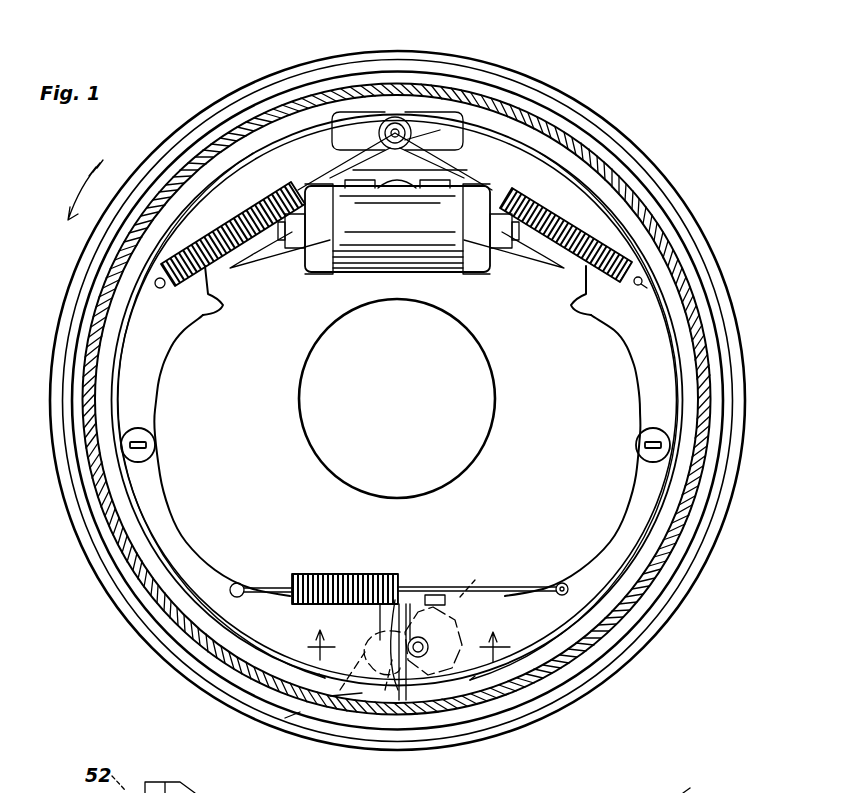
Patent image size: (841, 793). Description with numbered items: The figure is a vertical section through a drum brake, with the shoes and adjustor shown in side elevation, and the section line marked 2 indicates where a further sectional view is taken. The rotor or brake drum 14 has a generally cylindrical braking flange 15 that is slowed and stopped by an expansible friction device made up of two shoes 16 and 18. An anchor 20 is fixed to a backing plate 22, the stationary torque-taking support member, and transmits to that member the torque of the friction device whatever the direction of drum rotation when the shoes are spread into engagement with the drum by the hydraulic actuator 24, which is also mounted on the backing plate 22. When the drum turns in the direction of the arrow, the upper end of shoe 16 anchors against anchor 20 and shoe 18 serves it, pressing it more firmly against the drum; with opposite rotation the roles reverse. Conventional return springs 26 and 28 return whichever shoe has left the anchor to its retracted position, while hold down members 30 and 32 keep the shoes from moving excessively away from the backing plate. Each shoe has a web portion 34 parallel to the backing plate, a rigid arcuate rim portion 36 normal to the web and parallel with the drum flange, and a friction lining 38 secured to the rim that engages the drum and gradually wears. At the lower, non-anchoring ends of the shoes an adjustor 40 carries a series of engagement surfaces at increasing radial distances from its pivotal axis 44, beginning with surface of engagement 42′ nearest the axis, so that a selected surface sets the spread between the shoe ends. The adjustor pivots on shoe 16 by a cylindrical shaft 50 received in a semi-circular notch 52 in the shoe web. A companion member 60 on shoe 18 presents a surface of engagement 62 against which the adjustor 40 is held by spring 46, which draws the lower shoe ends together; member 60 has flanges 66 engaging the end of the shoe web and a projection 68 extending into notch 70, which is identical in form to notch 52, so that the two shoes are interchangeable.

The section line 2- 2 is at (400, 638).
The brake drum 14 is at (702, 784).
The braking flange 15 is at (648, 223).
The shoe 16 is at (607, 308).
The shoe 18 is at (147, 376).
The anchor 20 is at (395, 125).
The backing plate 22 is at (745, 338).
The hydraulic actuator 24 is at (362, 250).
The return spring 26 is at (225, 258).
The return spring 28 is at (543, 242).
The hold down member 30 is at (160, 430).
The hold down member 32 is at (636, 446).
The web portion 34 is at (178, 525).
The rim portion 36 is at (173, 582).
The lining 38 is at (660, 269).
The adjustor 40 is at (443, 653).
The surface of engagement 42′ is at (388, 575).
The pivotal axis 44 is at (417, 660).
The spring 46 is at (318, 573).
The cylindrical shaft 50 is at (473, 587).
The notch 52 is at (430, 590).
The member 60 is at (398, 690).
The surface of engagement 62 is at (410, 643).
The flanges 66 is at (345, 695).
The projection 68 is at (370, 660).
The notch 70 is at (303, 707).